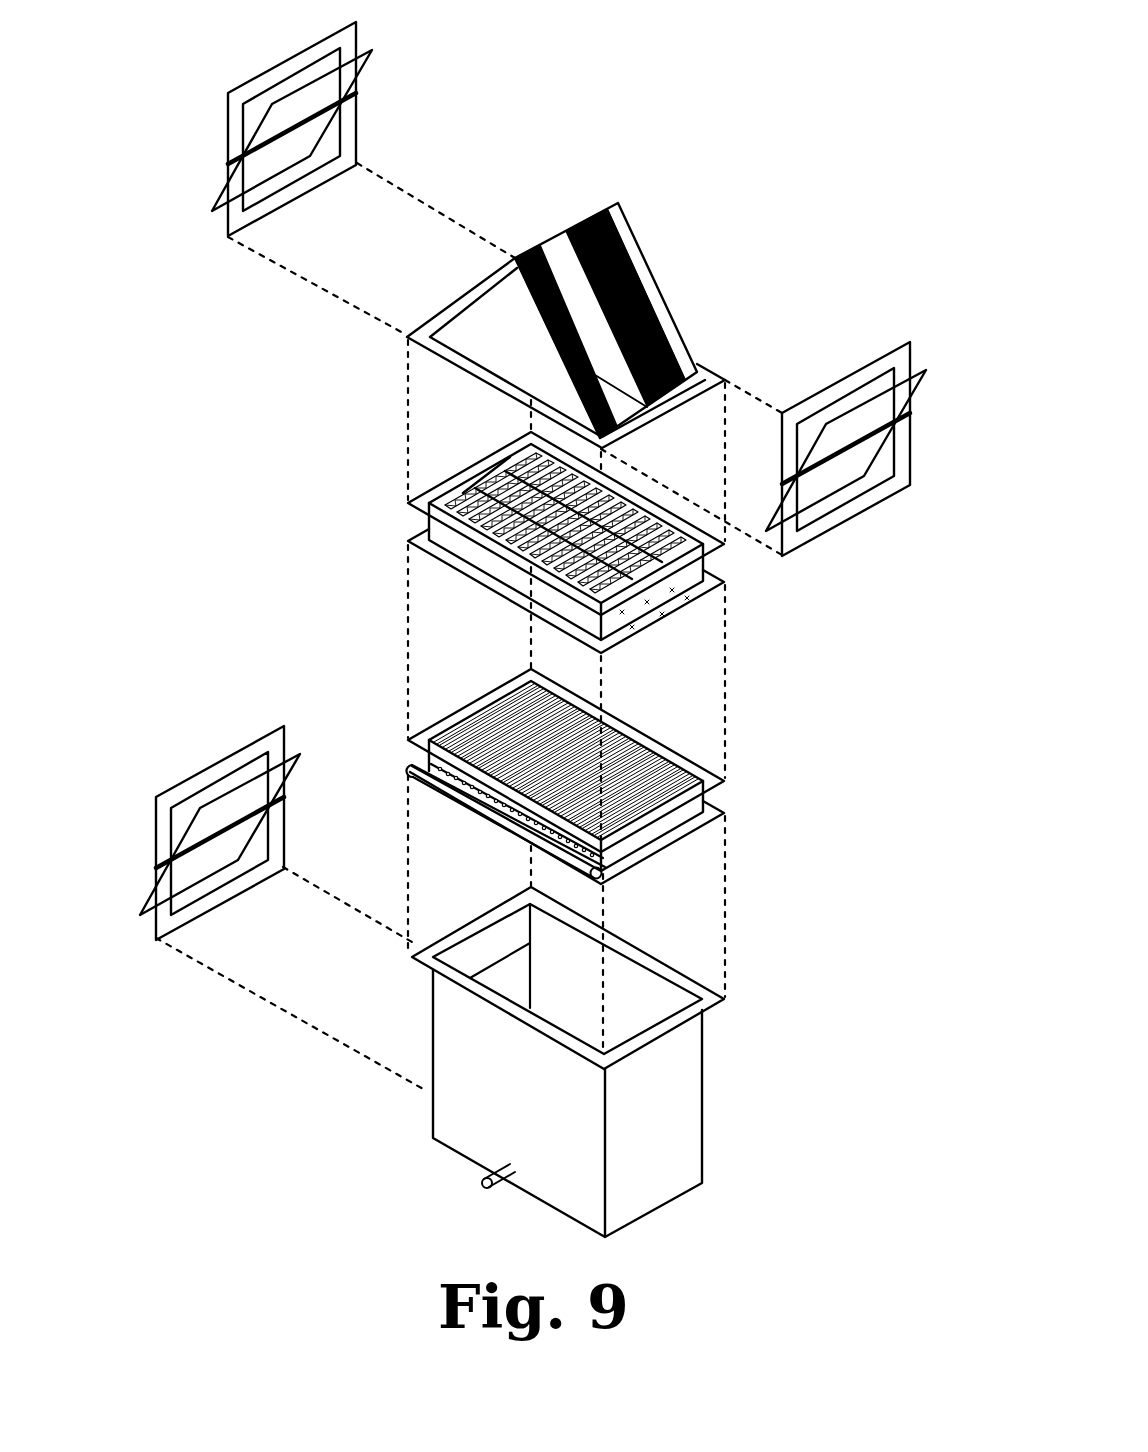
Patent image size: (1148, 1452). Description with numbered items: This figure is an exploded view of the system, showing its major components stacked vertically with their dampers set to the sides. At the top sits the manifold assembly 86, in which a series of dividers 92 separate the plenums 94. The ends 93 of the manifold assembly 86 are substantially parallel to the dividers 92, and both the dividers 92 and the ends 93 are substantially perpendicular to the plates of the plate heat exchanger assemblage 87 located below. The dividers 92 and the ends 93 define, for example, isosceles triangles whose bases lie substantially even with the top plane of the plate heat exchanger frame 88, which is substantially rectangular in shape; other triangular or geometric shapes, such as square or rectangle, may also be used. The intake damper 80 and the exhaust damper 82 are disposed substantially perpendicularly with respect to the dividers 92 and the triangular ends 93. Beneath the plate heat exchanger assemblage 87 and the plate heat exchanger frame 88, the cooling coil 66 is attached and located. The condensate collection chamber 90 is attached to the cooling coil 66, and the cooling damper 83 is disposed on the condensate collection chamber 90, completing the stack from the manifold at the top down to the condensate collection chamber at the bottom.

The cooling coil 66 is at (730, 802).
The intake damper 80 is at (917, 477).
The exhaust damper 82 is at (209, 222).
The cooling damper 83 is at (133, 838).
The manifold assembly 86 is at (565, 304).
The plate heat exchanger assemblage 87 is at (450, 473).
The plate heat exchanger frame 88 is at (524, 541).
The condensate collection chamber 90 is at (707, 1107).
The dividers 92 is at (585, 323).
The ends 93 is at (497, 321).
The plenums 94 is at (631, 270).